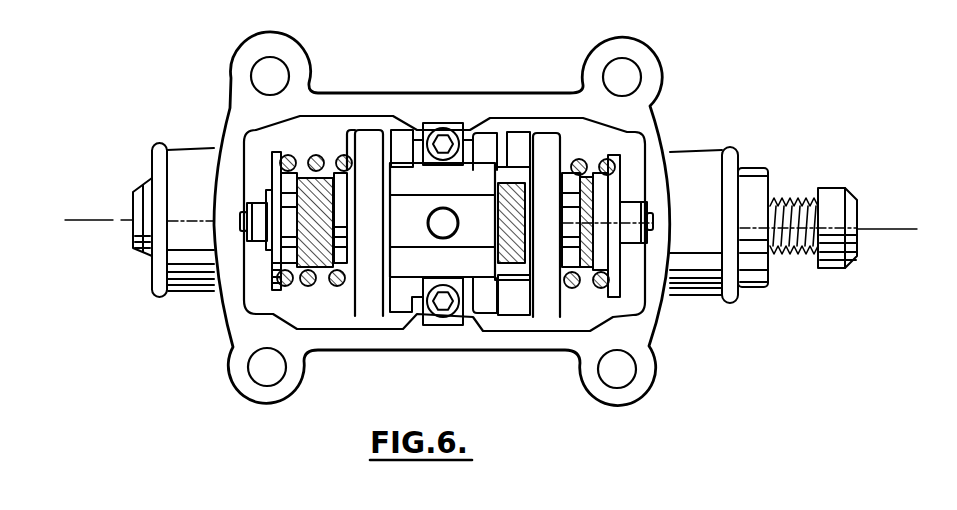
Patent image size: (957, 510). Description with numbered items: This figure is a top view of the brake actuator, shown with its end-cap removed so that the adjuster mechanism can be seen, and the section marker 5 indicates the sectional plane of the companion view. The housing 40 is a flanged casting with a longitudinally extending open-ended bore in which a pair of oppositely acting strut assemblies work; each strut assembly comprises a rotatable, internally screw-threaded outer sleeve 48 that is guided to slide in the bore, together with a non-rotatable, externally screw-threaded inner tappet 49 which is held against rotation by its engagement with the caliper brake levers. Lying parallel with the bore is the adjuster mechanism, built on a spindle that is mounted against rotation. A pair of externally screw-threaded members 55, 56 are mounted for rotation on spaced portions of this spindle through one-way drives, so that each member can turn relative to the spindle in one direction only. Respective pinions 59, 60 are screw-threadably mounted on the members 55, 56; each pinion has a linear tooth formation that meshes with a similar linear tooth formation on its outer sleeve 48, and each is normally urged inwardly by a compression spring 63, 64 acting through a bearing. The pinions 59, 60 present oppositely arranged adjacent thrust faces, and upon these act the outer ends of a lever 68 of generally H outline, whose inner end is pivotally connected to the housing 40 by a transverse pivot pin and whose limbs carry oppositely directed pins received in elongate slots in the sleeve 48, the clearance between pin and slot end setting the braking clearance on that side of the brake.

The section line 5- 5 is at (65, 220).
The housing 40 is at (220, 318).
The outer sleeve 48 is at (750, 263).
The inner tappet 49 is at (138, 257).
The externally screw-threaded member 55 is at (323, 262).
The externally screw-threaded member 56 is at (514, 268).
The pinion 59 is at (363, 157).
The pinion 60 is at (547, 150).
The compression spring 63 is at (282, 152).
The compression spring 64 is at (587, 163).
The lever 68 is at (402, 147).